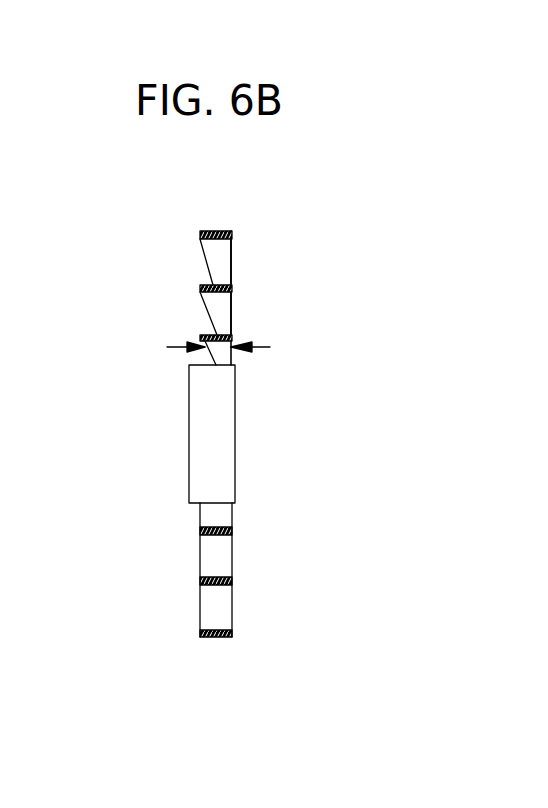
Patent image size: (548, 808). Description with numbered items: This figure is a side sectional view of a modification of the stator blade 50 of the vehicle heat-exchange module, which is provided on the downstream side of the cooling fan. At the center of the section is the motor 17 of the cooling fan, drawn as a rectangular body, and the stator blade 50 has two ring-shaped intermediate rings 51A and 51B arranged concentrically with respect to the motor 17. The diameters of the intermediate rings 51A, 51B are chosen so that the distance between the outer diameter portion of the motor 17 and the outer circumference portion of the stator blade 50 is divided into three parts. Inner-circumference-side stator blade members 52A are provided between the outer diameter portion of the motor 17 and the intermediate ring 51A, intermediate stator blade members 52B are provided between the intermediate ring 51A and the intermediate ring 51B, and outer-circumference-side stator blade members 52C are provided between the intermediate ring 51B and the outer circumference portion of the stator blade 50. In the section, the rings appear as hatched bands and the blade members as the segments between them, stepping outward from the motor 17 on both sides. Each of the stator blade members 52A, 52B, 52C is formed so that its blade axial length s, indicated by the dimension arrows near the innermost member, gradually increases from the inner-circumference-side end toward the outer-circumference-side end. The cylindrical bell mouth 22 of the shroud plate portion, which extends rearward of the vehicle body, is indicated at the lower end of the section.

The stator blade 50 is at (215, 231).
The outer-circumference-side stator blade members 52C is at (207, 252).
The intermediate stator blade members 52B is at (207, 307).
The inner-circumference-side stator blade members 52A is at (205, 360).
The intermediate ring 51B is at (231, 275).
The intermediate ring 51A is at (231, 327).
The blade axial length s is at (223, 354).
The motor 17 is at (225, 433).
The bell mouth 22 is at (217, 637).